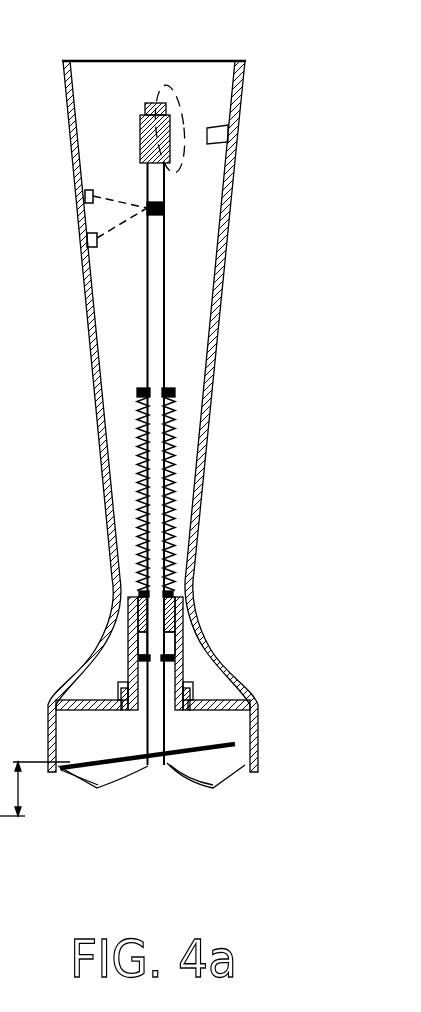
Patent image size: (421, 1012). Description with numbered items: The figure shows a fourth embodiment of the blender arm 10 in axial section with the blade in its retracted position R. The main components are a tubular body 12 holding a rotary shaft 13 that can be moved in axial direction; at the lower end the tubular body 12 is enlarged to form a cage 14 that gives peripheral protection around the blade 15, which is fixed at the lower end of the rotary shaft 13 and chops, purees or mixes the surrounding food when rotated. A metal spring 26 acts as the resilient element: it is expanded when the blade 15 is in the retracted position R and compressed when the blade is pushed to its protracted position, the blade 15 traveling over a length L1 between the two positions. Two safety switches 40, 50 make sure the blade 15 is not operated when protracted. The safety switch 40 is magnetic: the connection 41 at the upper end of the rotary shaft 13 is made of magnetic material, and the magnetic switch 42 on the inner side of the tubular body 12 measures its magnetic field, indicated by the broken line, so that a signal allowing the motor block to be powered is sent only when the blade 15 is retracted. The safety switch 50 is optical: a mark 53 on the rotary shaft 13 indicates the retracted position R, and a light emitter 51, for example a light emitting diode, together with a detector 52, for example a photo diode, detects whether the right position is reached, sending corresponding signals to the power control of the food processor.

The blender arm 10 is at (202, 416).
The tubular body 12 is at (216, 296).
The rotary shaft 13 is at (165, 294).
The cage 14 is at (260, 741).
The blade 15 is at (200, 757).
The metal spring 26 is at (168, 540).
The safety switch 40 is at (192, 95).
The connection 41 is at (140, 125).
The magnetic switch 42 is at (222, 133).
The safety switch 50 is at (116, 195).
The light emitter 51 is at (87, 242).
The detector 52 is at (83, 197).
The mark 53 is at (165, 209).
The retracted position R is at (258, 803).
The length L1 is at (35, 789).